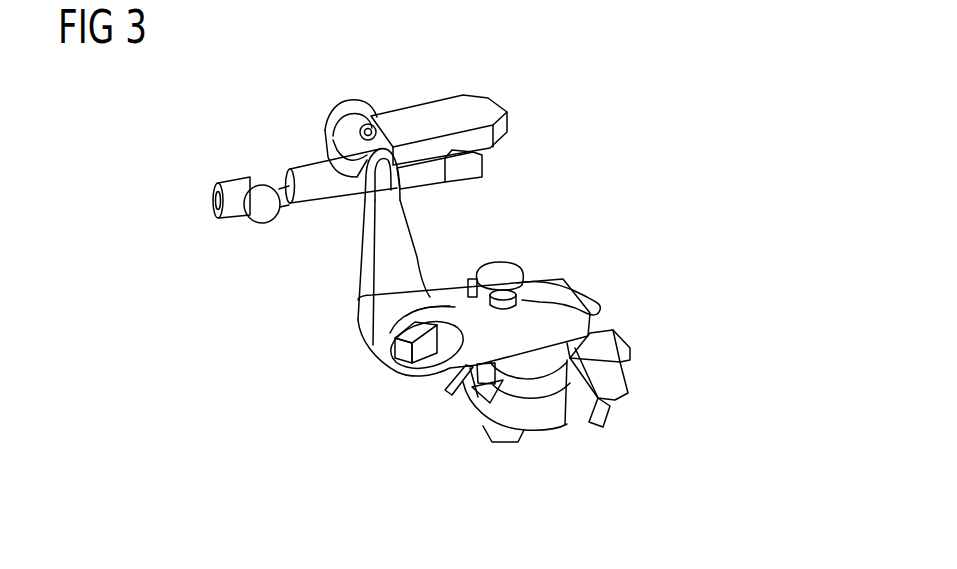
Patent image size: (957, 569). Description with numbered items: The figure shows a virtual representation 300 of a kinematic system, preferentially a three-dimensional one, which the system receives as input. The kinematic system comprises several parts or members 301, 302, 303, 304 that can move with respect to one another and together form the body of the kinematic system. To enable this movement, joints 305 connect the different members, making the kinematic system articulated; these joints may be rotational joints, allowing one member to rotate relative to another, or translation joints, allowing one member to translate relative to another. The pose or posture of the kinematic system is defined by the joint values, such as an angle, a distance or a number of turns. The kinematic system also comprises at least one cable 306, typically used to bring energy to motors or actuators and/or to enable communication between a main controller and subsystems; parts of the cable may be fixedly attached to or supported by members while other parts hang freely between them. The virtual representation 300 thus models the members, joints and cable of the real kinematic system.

The virtual representation 300 is at (627, 136).
The member 301 is at (566, 428).
The member 302 is at (466, 366).
The member 303 is at (381, 273).
The member 304 is at (219, 186).
The joint 305 is at (437, 198).
The cable 306 is at (325, 123).